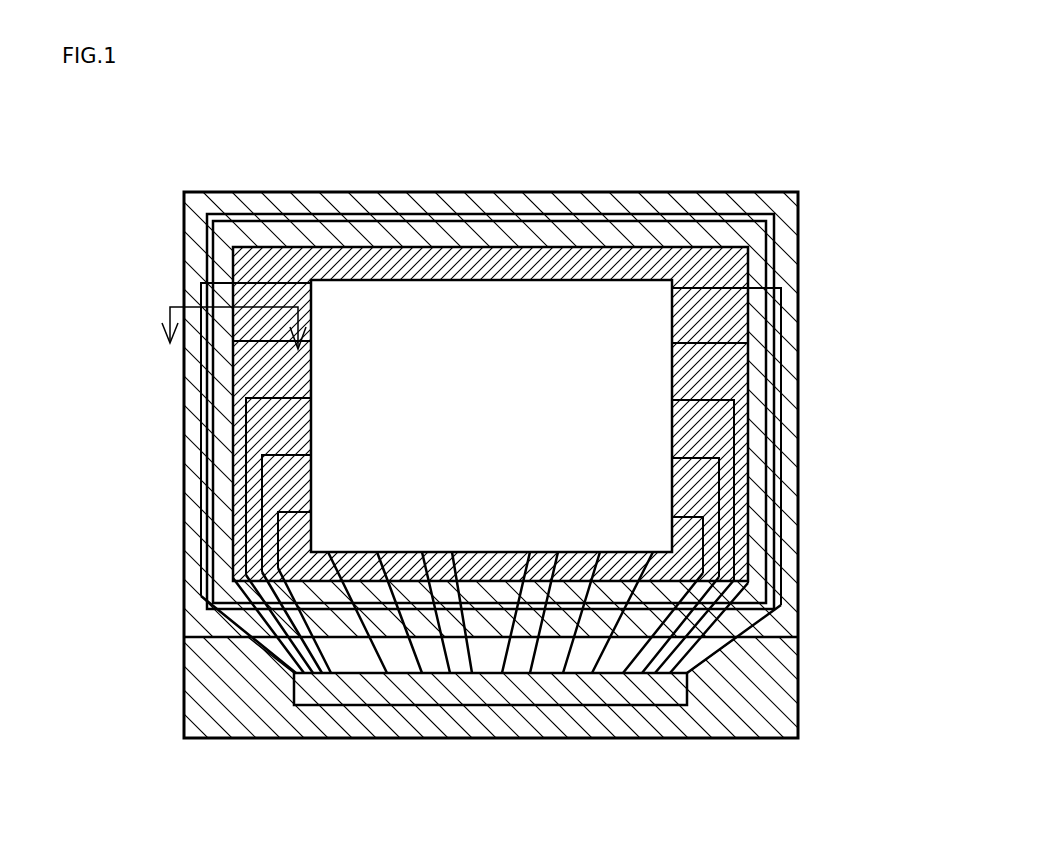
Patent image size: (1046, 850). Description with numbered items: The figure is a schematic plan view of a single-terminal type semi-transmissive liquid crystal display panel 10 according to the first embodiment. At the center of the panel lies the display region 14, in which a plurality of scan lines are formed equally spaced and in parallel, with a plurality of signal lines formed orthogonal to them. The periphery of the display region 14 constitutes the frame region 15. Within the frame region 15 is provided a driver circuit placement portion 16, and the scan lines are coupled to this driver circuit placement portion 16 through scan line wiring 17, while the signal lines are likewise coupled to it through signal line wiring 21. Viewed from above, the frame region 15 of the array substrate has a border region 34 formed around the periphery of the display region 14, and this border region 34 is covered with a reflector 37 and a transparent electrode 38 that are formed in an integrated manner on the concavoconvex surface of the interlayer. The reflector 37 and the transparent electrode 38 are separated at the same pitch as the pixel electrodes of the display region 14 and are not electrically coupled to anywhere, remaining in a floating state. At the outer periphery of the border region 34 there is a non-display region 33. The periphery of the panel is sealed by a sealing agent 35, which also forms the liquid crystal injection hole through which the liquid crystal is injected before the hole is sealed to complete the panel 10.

The semi-transmissive liquid crystal display panel 10 is at (923, 153).
The display region 14 is at (628, 335).
The frame region 15 is at (222, 705).
The driver circuit placement portion 16 is at (383, 690).
The scan line wiring 17 is at (233, 408).
The signal line wiring 21 is at (590, 645).
The non-display region 33 is at (786, 222).
The border region 34 is at (740, 265).
The sealing agent 35 is at (251, 220).
The reflector 37 is at (523, 414).
The transparent electrode 38 is at (285, 270).